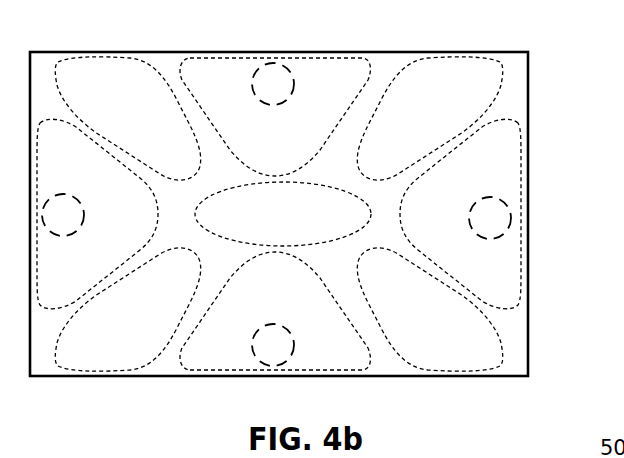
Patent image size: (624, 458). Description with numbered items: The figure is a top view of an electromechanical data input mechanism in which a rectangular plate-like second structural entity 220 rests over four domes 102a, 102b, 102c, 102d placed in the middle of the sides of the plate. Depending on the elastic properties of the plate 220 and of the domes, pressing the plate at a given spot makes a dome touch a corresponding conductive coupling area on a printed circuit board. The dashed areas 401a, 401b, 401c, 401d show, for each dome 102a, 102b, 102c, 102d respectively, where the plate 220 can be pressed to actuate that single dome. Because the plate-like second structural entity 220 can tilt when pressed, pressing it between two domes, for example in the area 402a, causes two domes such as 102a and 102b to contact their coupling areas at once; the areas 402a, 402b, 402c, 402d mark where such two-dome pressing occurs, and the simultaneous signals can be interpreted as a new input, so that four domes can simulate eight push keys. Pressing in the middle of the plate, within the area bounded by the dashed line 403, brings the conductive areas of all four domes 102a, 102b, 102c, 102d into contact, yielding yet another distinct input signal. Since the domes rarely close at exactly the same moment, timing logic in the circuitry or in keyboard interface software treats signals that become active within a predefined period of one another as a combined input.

The plate-like second structural entity 220 is at (502, 51).
The four-dome pressing area 403 is at (298, 226).
The two-dome pressing area 402a is at (154, 116).
The two-dome pressing area 402b is at (457, 116).
The two-dome pressing area 402c is at (458, 334).
The two-dome pressing area 402d is at (155, 334).
The single-dome pressing area 401a is at (100, 280).
The single-dome pressing area 401b is at (359, 90).
The single-dome pressing area 401c is at (511, 170).
The single-dome pressing area 401d is at (360, 360).
The dome 102a is at (48, 197).
The dome 102b is at (283, 104).
The dome 102c is at (469, 218).
The dome 102d is at (258, 326).